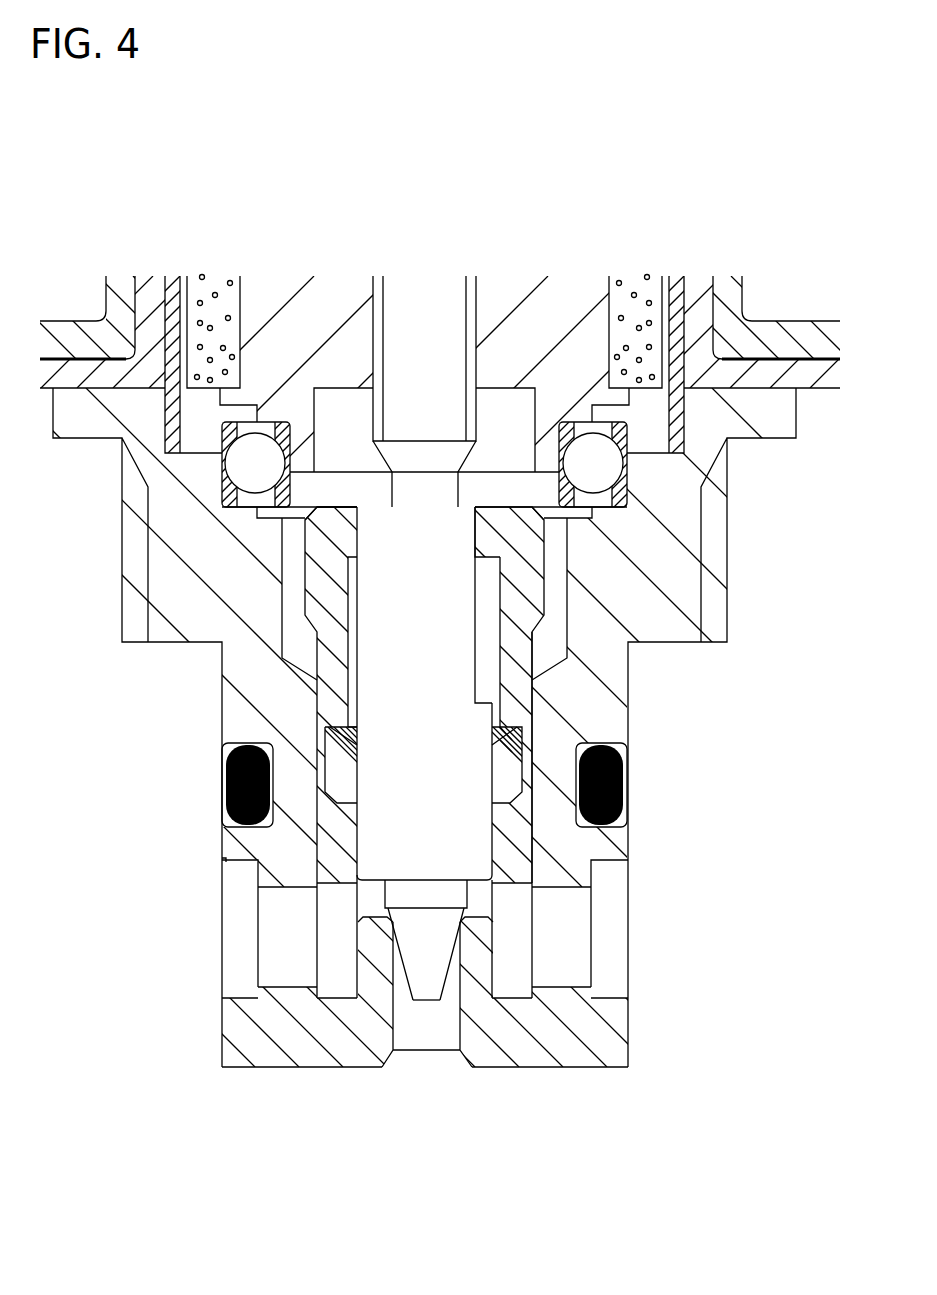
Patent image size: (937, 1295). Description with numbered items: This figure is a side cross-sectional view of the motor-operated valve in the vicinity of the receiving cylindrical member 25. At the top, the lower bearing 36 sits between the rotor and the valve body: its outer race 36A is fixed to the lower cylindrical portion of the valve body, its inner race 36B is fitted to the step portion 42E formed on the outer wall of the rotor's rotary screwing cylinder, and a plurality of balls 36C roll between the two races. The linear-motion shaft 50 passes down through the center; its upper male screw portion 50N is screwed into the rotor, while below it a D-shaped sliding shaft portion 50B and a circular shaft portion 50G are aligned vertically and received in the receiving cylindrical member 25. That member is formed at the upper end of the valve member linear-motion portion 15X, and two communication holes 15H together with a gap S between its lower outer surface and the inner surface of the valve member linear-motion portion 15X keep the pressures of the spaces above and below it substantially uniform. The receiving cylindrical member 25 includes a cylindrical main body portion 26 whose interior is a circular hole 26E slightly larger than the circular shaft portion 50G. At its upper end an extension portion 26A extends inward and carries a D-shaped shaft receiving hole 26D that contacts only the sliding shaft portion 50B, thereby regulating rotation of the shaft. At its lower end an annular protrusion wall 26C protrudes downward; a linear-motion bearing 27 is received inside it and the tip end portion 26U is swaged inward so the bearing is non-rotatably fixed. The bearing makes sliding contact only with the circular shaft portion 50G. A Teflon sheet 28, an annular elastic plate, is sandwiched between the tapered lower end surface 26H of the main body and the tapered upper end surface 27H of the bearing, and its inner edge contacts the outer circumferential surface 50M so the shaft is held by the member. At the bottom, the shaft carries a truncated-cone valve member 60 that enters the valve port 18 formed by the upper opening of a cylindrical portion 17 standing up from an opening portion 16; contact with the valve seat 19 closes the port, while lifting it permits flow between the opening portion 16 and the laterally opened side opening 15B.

The linear-motion shaft 50 is at (422, 544).
The male screw portion 50N is at (382, 347).
The sliding shaft portion 50B is at (380, 603).
The circular shaft portion 50G is at (383, 776).
The outer circumferential surface 50M is at (494, 875).
The cylindrical main body portion 26 is at (461, 615).
The extension portion 26A is at (563, 553).
The annular protrusion wall 26C is at (535, 800).
The shaft receiving hole 26D is at (363, 515).
The circular hole 26E is at (348, 656).
The lower end surface 26H is at (512, 740).
The tip end portion 26U is at (525, 880).
The linear-motion bearing 27 is at (520, 760).
The upper end surface 27H is at (512, 748).
The Teflon sheet 28 is at (512, 753).
The receiving cylindrical member 25 is at (556, 561).
The communication holes 15H is at (282, 580).
The valve member linear-motion portion 15X is at (317, 827).
The side opening 15B is at (297, 990).
The opening portion 16 is at (402, 1005).
The cylindrical portion 17 is at (373, 965).
The valve port 18 is at (447, 945).
The valve seat 19 is at (383, 902).
The bearing 36 is at (488, 478).
The outer race 36A is at (618, 430).
The inner race 36B is at (592, 510).
The balls 36C is at (597, 463).
The step portion 42E is at (716, 283).
The valve member 60 is at (433, 940).
The gap S is at (352, 690).